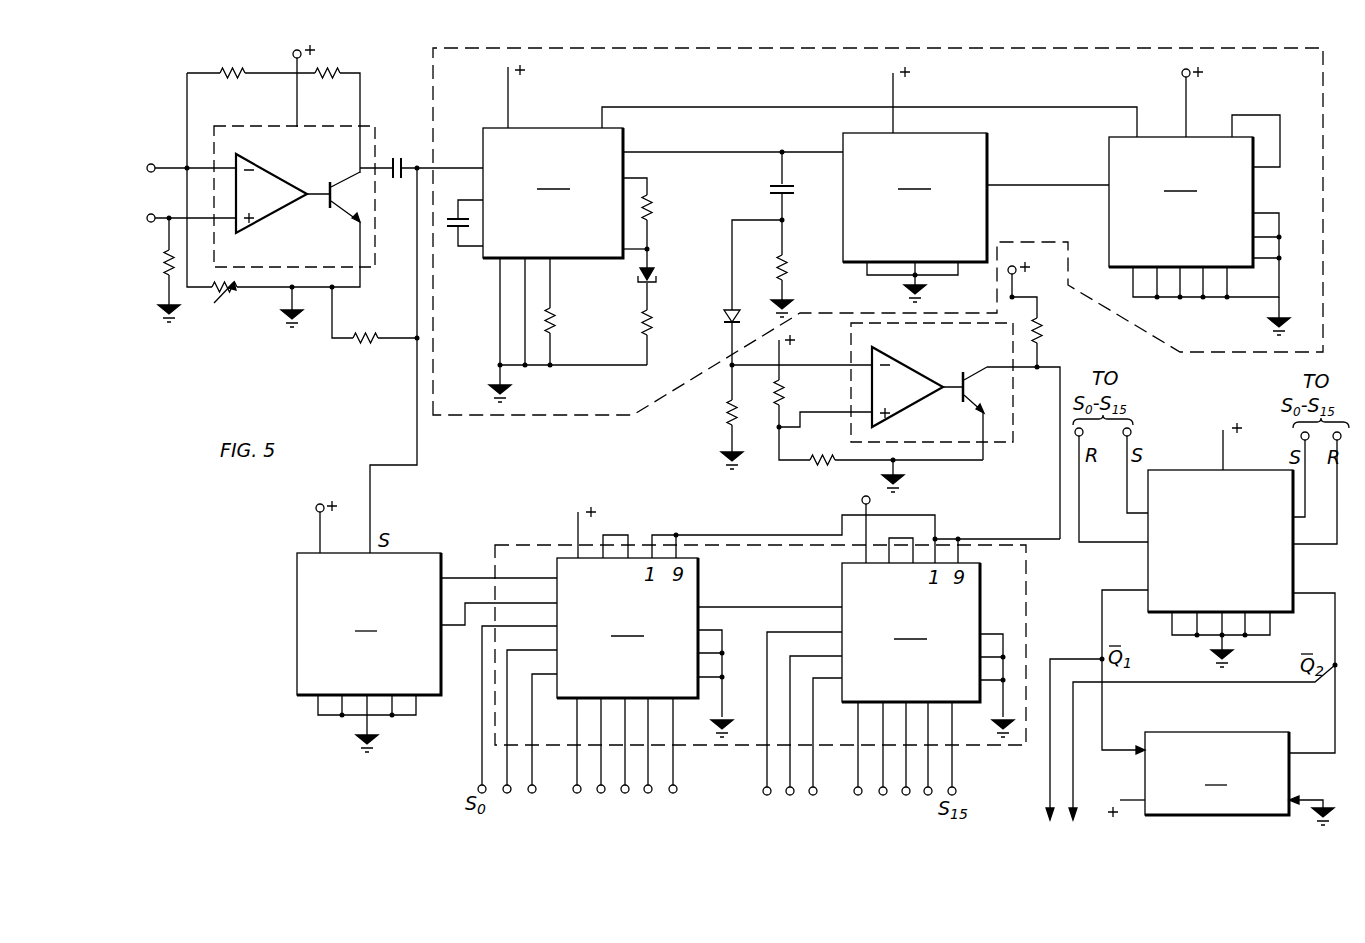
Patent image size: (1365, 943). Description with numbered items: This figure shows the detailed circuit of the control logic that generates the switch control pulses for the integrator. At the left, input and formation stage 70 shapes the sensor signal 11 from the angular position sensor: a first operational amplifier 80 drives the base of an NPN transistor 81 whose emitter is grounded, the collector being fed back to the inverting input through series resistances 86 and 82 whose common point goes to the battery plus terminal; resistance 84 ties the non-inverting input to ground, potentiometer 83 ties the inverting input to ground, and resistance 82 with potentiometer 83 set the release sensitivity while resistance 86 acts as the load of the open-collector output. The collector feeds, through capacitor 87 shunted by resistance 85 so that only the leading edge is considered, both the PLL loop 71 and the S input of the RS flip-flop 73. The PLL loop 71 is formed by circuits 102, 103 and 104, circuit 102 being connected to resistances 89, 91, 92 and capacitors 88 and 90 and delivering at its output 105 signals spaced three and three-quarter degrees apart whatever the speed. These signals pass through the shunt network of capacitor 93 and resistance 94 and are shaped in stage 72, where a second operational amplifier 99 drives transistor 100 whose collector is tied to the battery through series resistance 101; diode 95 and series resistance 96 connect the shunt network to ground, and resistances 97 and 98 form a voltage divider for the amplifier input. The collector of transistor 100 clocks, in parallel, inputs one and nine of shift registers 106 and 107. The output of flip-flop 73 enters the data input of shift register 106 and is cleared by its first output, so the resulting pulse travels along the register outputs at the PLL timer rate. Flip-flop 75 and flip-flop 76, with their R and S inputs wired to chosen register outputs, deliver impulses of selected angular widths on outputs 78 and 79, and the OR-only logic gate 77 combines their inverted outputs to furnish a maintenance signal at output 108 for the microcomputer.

The sensor signal 11 is at (164, 168).
The input and formation stage 70 is at (368, 126).
The PLL loop 71 is at (1170, 352).
The shaping stage 72 is at (1003, 442).
The RS flip-flop 73 is at (369, 624).
The flip-flop 75 is at (1148, 563).
The flip-flop 76 is at (1292, 573).
The OR-only logic gate 77 is at (1217, 773).
The output 78 is at (1050, 788).
The output 79 is at (1073, 789).
The first operational amplifier 80 is at (294, 177).
The NPN transistor 81 is at (332, 181).
The resistance 82 is at (233, 68).
The potentiometer 83 is at (231, 296).
The resistance 84 is at (164, 272).
The resistance 85 is at (369, 335).
The resistance 86 is at (331, 68).
The capacitor 87 is at (414, 149).
The capacitor 88 is at (454, 240).
The resistance 89 is at (652, 207).
The capacitor 90 is at (654, 272).
The resistance 91 is at (652, 324).
The resistance 92 is at (556, 317).
The capacitor 93 is at (794, 188).
The resistance 94 is at (787, 262).
The diode 95 is at (726, 308).
The series resistance 96 is at (727, 412).
The resistance 97 is at (787, 398).
The resistance 98 is at (814, 468).
The second operational amplifier 99 is at (908, 372).
The transistor 100 is at (960, 395).
The series resistance 101 is at (1042, 330).
The first stage of PLL loop 102 is at (553, 193).
The circuit 103 is at (915, 197).
The circuit 104 is at (1181, 202).
The output 105 is at (640, 152).
The shift register 106 is at (627, 628).
The shift register 107 is at (911, 632).
The output 108 is at (1238, 816).